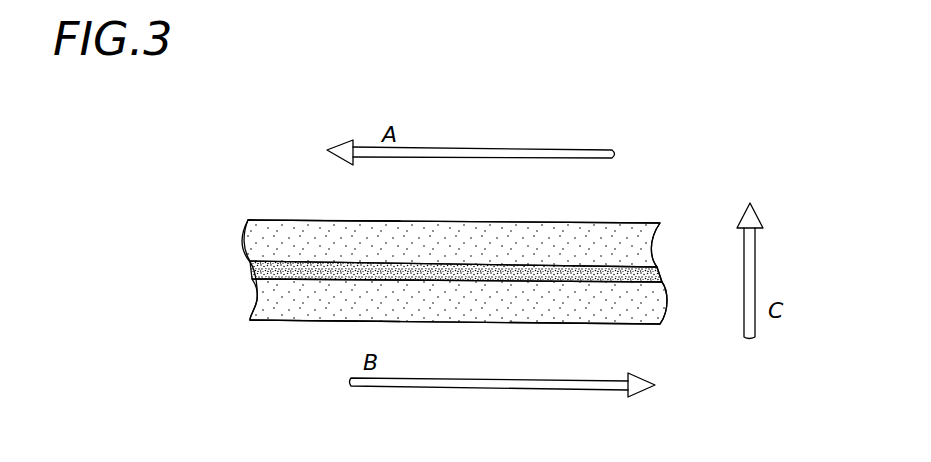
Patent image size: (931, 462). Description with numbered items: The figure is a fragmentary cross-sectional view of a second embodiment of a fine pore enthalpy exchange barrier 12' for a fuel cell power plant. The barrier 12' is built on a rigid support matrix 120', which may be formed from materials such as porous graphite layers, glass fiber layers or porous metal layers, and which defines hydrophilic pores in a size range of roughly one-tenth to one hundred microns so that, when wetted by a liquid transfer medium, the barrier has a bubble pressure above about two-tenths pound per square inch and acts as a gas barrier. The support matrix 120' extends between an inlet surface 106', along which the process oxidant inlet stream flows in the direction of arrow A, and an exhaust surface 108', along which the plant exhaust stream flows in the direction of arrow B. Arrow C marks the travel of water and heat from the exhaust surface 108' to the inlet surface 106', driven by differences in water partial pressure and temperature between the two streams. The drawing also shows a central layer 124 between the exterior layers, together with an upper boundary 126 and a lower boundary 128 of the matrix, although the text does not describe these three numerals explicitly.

The fine pore enthalpy exchange barrier 12' is at (488, 207).
The inlet surface 106' is at (452, 224).
The exhaust surface 108' is at (466, 323).
The support matrix 120' is at (402, 271).
The adhesive layer 124 is at (660, 270).
The upper surface 126 is at (243, 222).
The lower surface 128 is at (250, 320).